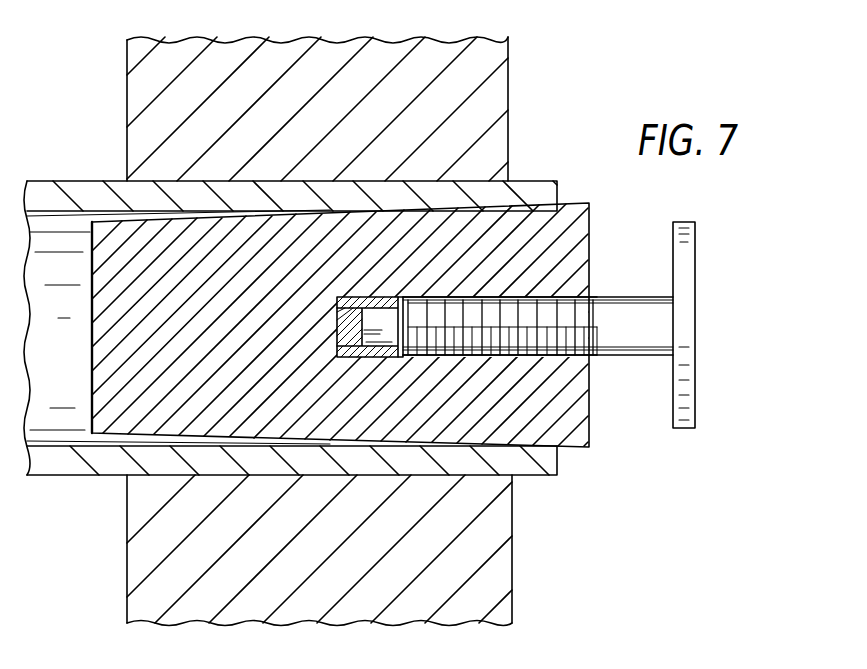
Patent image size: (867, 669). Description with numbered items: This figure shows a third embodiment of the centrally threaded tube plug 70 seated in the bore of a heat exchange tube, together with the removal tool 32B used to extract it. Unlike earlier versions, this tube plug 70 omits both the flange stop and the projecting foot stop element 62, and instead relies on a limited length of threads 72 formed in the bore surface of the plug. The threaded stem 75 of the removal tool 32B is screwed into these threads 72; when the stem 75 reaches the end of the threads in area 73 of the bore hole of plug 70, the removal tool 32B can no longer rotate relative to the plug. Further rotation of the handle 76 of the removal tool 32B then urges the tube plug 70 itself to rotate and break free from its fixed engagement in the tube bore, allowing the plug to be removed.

The tube plug 70 is at (550, 230).
The threads 72 is at (537, 357).
The area 73 is at (400, 297).
The threaded stem 75 is at (556, 297).
The handle 76 is at (686, 418).
The projecting foot stop element 62 is at (383, 333).
The removal tool 32B is at (624, 433).